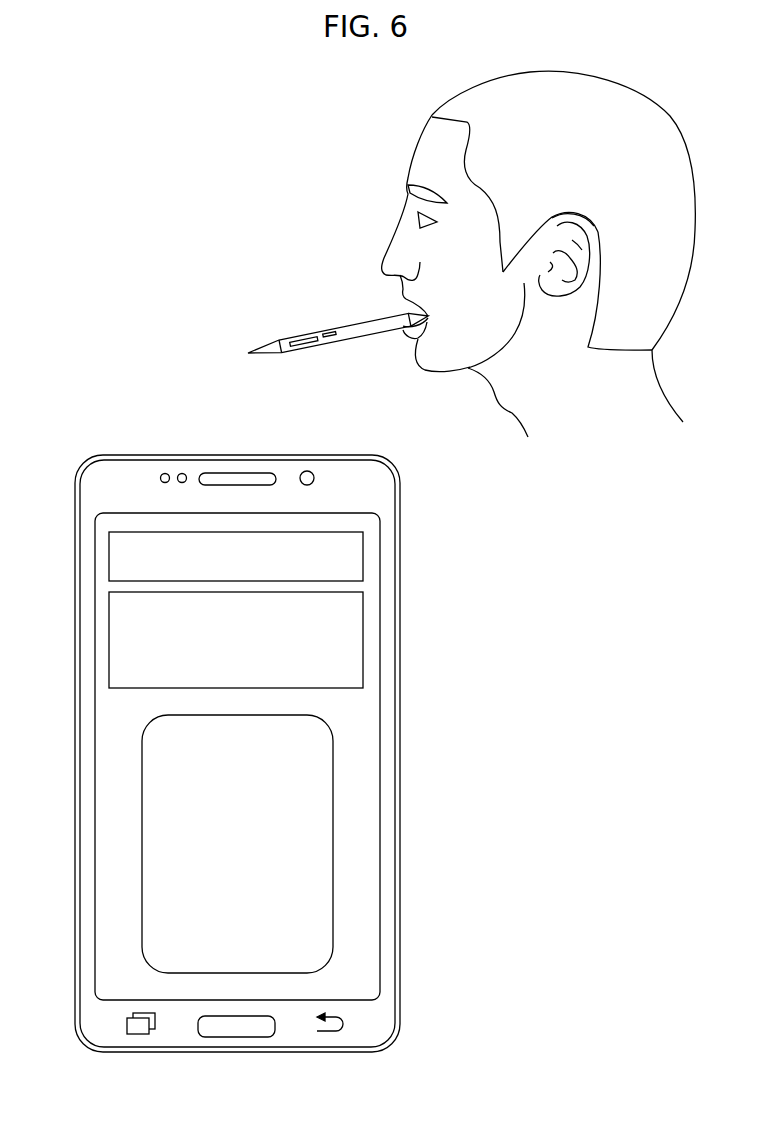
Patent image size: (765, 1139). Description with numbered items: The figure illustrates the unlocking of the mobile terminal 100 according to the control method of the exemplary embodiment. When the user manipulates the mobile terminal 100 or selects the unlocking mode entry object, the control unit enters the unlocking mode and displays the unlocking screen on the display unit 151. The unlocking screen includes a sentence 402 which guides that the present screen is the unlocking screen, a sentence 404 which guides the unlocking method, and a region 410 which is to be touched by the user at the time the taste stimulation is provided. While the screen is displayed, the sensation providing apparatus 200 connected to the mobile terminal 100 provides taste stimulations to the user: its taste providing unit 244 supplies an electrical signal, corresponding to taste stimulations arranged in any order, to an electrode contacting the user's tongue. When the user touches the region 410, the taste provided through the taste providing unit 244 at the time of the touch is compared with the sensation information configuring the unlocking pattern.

The mobile terminal 100 is at (155, 443).
The display unit 151 is at (95, 733).
The sensation providing apparatus 200 is at (308, 325).
The taste providing unit 244 is at (395, 329).
The sentence 402 is at (109, 554).
The sentence 404 is at (109, 642).
The region 410 is at (143, 837).